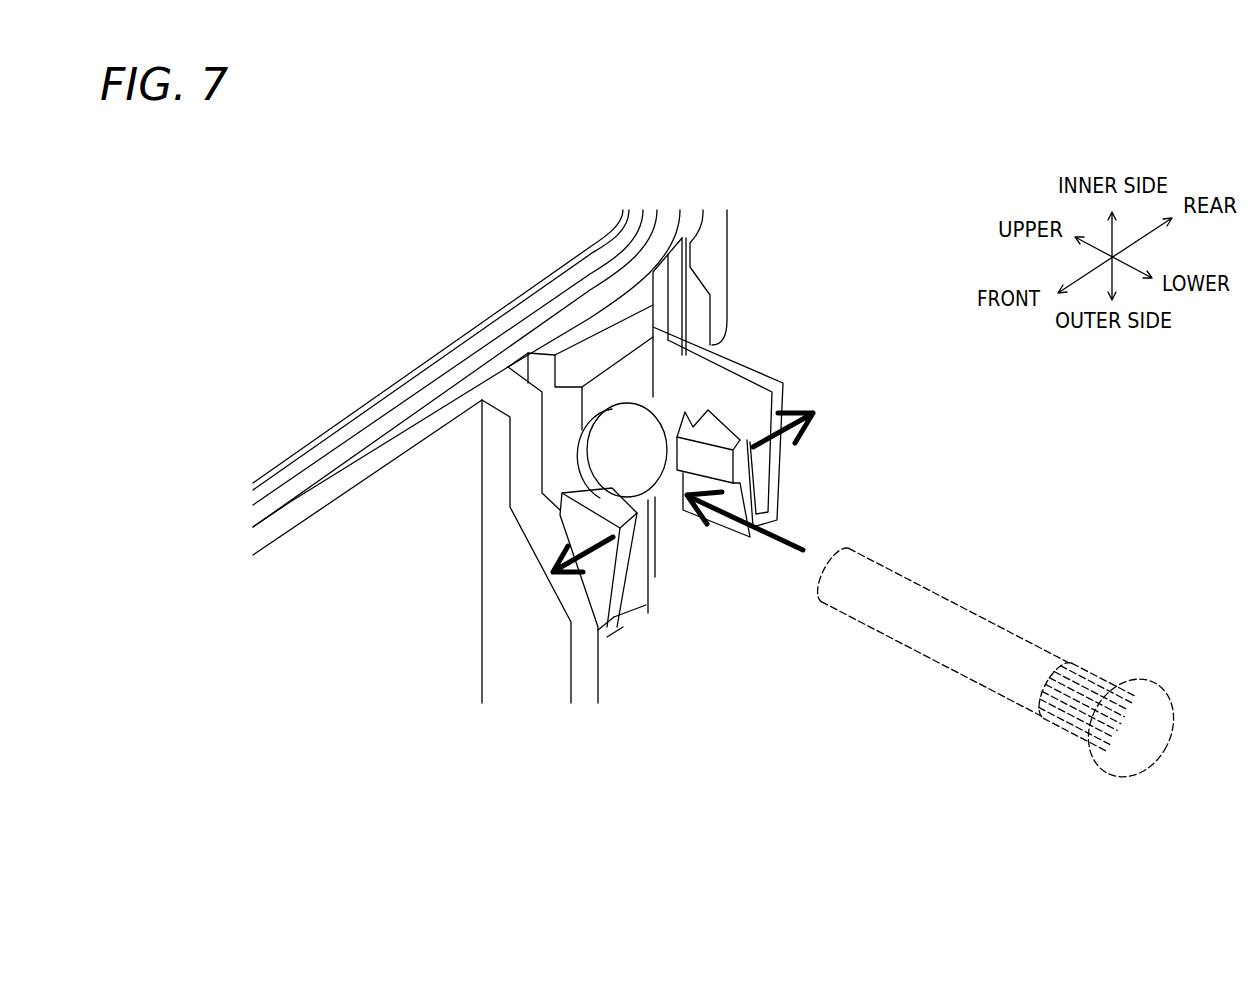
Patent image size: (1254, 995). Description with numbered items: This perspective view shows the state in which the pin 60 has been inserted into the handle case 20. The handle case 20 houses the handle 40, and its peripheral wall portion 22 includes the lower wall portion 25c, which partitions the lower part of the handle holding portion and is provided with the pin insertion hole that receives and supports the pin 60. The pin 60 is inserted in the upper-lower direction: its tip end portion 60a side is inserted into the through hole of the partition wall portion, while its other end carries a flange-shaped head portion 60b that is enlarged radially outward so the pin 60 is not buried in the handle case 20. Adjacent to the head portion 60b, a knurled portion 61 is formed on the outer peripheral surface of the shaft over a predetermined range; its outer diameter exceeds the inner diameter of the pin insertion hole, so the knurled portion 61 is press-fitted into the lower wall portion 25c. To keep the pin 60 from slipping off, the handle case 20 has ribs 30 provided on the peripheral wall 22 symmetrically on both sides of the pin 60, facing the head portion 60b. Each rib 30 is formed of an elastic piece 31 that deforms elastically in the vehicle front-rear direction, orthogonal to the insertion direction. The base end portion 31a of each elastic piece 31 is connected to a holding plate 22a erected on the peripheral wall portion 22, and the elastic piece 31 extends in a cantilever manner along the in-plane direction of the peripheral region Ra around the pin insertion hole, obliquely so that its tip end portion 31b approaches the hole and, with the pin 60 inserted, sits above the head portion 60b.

The handle case 20 is at (745, 226).
The peripheral wall portion 22 is at (358, 533).
The holding plate 22a is at (495, 636).
The lower wall portion 25c is at (568, 270).
The rib 30 is at (642, 536).
The elastic piece 31 is at (642, 536).
The base end portion 31a is at (608, 630).
The tip end portion 31b is at (600, 518).
The handle 40 is at (510, 303).
The pin 60 is at (917, 566).
The tip end portion 60a is at (838, 560).
The head portion 60b is at (1123, 745).
The knurled portion 61 is at (1083, 657).
The peripheral region Ra is at (649, 359).